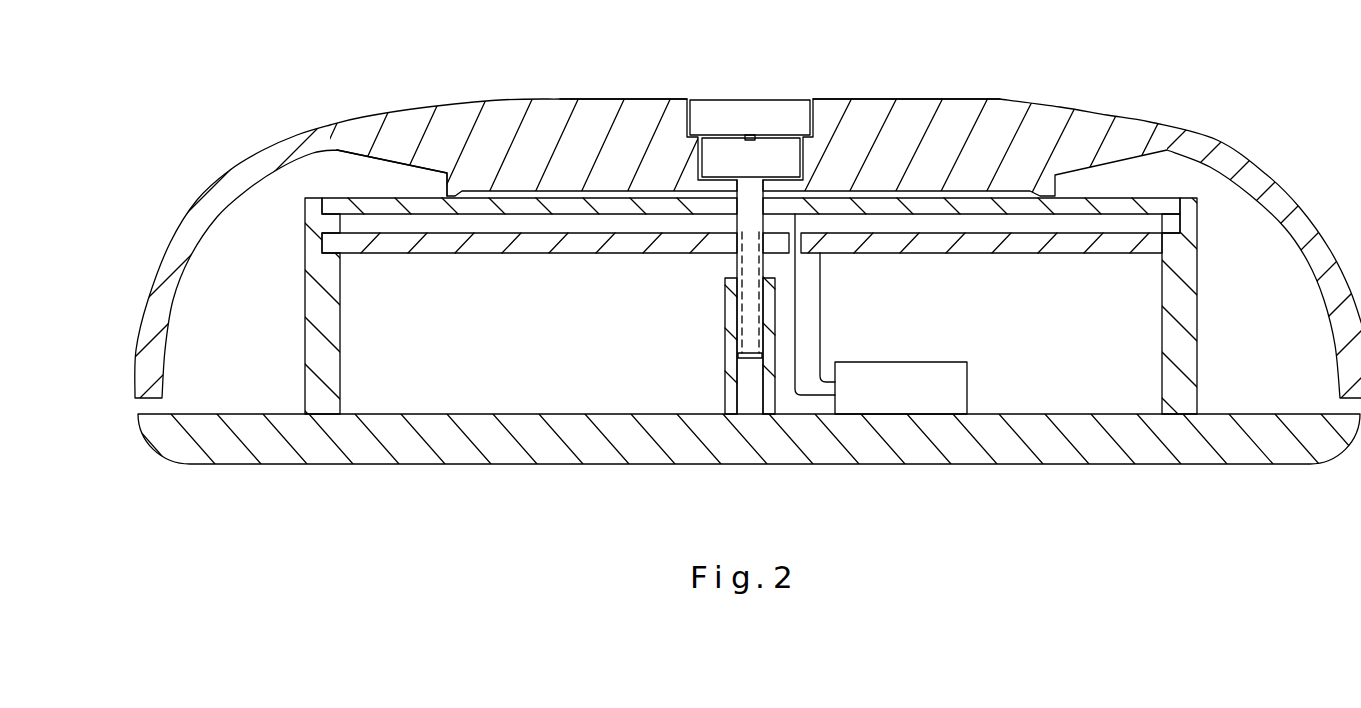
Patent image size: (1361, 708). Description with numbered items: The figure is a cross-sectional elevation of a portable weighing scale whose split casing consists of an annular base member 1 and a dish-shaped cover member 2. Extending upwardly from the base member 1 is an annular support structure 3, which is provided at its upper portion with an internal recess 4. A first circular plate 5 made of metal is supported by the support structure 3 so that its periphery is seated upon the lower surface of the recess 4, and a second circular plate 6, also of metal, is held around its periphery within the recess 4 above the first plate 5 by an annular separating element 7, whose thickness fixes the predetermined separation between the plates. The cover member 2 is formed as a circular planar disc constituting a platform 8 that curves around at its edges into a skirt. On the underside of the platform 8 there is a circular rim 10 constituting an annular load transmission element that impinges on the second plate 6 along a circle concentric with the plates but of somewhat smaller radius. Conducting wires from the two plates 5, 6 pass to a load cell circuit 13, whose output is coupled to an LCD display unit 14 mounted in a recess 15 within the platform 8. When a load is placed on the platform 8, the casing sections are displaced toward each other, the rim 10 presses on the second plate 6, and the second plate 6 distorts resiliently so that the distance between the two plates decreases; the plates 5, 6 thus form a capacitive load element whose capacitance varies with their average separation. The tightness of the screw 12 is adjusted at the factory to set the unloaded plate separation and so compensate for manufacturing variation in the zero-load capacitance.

The annular base member 1 is at (517, 452).
The dish-shaped cover member 2 is at (1018, 95).
The annular support structure 3 is at (342, 337).
The internal recess 4 is at (343, 205).
The first circular plate 5 is at (1025, 254).
The second circular plate 6 is at (1112, 208).
The annular separating element 7 is at (1170, 226).
The platform 8 is at (900, 100).
The circular rim 10 is at (426, 170).
The screw 12 is at (768, 178).
The load cell circuit 13 is at (968, 378).
The LCD display unit 14 is at (790, 117).
The recess 15 is at (705, 102).